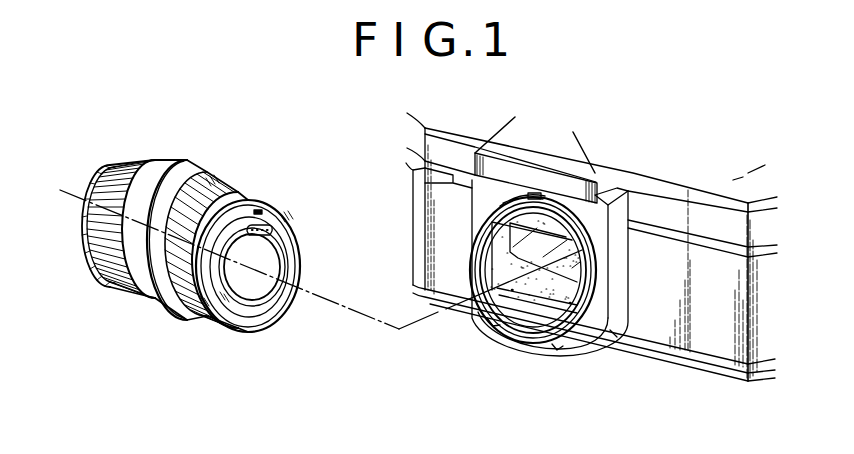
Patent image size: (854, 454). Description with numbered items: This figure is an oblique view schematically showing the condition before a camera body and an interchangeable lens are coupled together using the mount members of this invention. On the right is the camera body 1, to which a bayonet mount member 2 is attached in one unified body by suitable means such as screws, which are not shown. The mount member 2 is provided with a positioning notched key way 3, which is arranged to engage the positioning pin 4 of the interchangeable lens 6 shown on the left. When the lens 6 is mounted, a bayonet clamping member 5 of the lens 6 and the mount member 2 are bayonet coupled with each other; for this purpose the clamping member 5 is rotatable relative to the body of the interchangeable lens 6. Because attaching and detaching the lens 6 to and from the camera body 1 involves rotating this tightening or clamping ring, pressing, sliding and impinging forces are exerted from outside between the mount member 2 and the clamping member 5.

The camera body 1 is at (650, 336).
The bayonet mount member 2 is at (503, 332).
The positioning notched key way 3 is at (533, 195).
The positioning pin 4 is at (258, 210).
The bayonet clamping member 5 is at (242, 334).
The interchangeable lens 6 is at (186, 178).